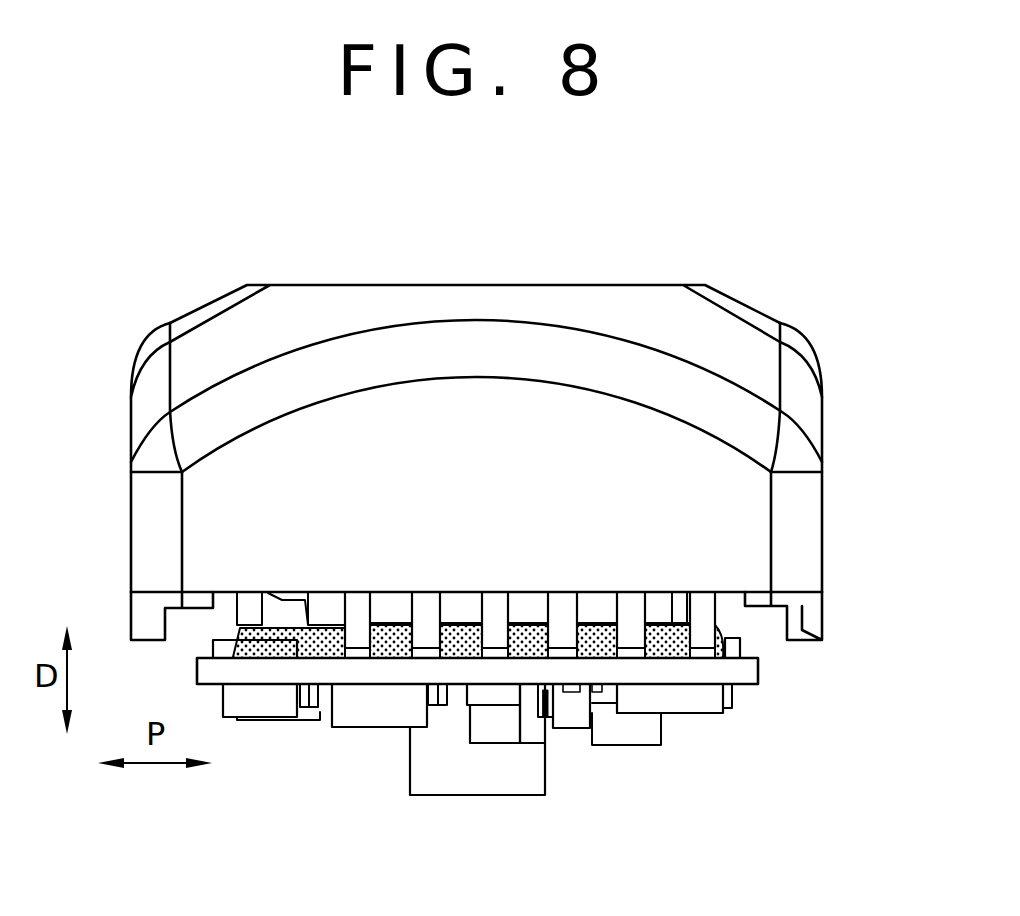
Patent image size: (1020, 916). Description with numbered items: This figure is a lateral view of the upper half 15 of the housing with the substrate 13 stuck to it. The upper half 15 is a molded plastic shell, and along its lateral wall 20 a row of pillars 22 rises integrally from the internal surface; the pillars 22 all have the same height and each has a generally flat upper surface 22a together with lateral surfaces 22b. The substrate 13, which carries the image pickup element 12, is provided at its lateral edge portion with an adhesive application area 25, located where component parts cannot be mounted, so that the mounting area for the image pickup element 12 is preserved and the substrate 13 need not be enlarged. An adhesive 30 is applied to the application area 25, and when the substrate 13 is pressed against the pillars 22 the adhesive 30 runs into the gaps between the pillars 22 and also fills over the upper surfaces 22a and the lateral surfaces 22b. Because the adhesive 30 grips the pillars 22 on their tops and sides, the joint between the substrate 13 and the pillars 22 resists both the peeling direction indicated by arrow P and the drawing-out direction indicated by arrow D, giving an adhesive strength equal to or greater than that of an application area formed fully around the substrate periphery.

The lateral wall 20 is at (332, 495).
The adhesive 30 is at (397, 630).
The image pickup element 12 is at (463, 610).
The pillar 22 is at (632, 610).
The upper half 15 is at (673, 338).
The substrate 13 is at (745, 670).
The adhesive application area 25 is at (362, 658).
The upper surface of pillar 22a is at (562, 648).
The lateral surface of pillar 22b is at (547, 632).